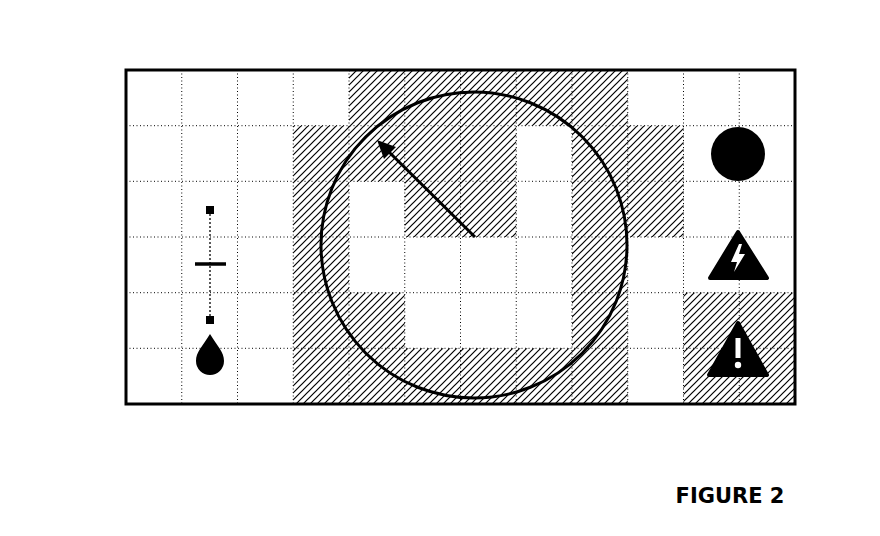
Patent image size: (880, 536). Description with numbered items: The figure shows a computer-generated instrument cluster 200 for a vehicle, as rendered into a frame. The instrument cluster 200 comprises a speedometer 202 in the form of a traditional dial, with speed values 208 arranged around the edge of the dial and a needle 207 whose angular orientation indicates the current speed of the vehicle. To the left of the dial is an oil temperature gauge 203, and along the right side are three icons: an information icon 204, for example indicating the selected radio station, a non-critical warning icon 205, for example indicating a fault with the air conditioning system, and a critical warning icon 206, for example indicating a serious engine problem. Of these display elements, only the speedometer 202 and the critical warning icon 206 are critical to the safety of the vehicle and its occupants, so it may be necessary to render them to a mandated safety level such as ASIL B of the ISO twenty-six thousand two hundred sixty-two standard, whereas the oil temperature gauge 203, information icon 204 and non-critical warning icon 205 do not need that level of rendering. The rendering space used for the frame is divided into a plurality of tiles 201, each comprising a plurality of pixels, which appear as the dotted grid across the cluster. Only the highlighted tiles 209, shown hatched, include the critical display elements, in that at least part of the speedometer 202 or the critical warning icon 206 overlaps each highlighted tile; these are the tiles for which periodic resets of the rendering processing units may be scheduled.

The instrument cluster 200 is at (88, 78).
The tiles 201 is at (211, 100).
The speedometer 202 is at (465, 401).
The oil temperature gauge 203 is at (212, 376).
The information icon 204 is at (766, 152).
The non-critical warning icon 205 is at (767, 275).
The critical warning icon 206 is at (767, 372).
The needle 207 is at (430, 188).
The speed values 208 is at (538, 70).
The highlighted tiles 209 is at (322, 378).